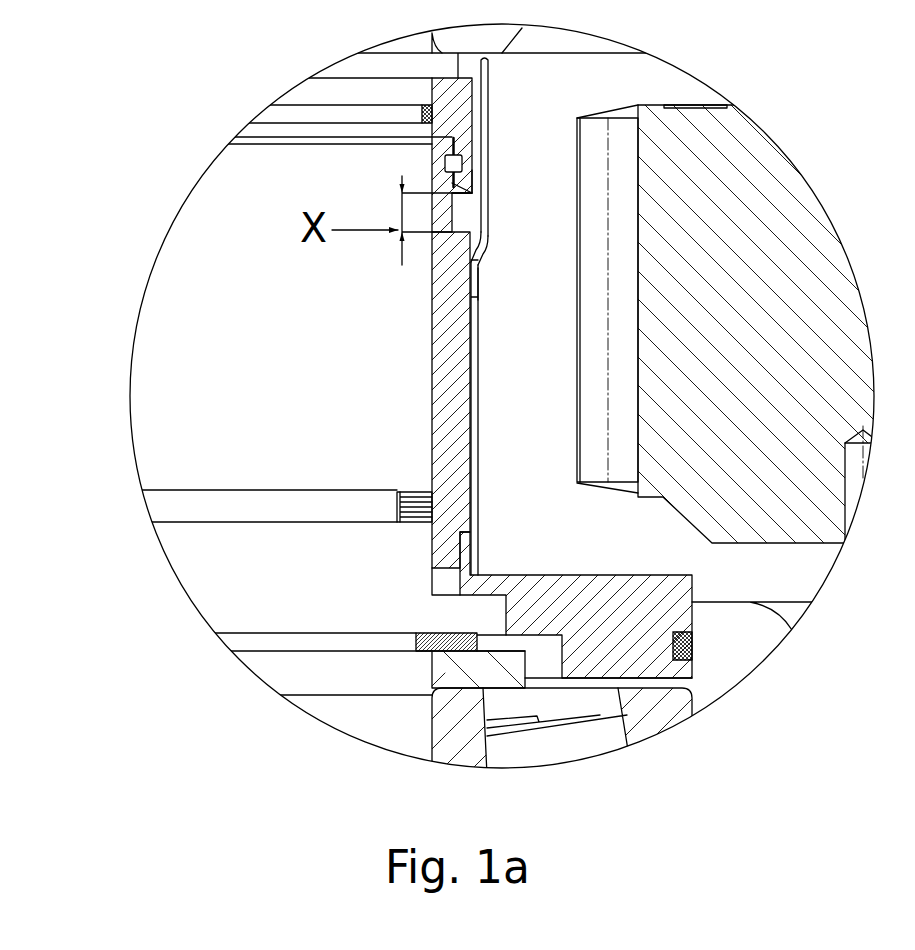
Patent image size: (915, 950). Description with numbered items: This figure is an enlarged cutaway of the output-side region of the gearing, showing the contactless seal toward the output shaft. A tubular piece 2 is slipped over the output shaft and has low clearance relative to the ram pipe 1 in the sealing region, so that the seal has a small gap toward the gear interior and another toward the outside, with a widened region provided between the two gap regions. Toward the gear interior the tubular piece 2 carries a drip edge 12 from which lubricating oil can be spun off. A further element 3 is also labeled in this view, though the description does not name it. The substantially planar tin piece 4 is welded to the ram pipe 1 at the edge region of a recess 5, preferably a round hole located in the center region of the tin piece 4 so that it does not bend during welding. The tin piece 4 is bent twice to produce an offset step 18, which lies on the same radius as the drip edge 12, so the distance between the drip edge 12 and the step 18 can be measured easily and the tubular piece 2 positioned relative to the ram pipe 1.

The ram pipe 1 is at (447, 367).
The tubular piece 2 is at (458, 110).
The screw 3 is at (452, 163).
The tin piece 4 is at (486, 112).
The recess 5 is at (486, 264).
The drip edge 12 is at (472, 193).
The step 18 is at (480, 238).